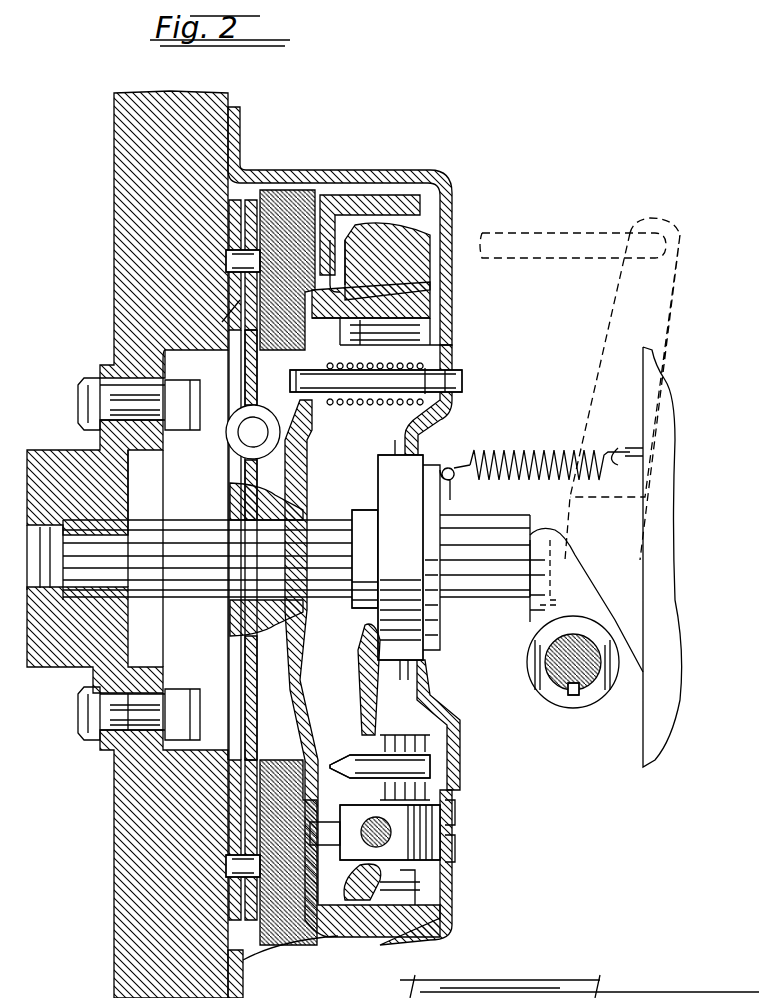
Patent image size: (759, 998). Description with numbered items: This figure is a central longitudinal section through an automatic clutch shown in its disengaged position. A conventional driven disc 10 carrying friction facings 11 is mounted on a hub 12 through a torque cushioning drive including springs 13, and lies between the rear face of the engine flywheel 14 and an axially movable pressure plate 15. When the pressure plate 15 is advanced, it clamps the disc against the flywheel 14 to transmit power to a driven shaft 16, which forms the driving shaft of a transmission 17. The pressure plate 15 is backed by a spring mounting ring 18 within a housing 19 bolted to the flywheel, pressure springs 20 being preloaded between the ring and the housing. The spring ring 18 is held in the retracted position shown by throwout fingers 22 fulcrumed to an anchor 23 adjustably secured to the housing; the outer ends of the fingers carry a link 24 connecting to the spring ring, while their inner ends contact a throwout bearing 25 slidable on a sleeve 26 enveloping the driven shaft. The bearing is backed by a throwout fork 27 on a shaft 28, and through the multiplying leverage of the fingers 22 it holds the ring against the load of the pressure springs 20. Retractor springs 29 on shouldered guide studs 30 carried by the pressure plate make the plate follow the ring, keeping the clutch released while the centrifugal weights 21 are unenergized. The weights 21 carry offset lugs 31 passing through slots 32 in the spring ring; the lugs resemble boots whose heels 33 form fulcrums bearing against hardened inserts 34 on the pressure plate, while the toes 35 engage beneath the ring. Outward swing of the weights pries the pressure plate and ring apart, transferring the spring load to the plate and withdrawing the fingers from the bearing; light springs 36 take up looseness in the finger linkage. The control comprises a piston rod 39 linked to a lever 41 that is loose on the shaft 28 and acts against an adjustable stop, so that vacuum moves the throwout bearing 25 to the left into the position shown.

The driven disc 10 is at (245, 352).
The friction facings 11 is at (253, 198).
The hub 12 is at (235, 500).
The springs 13 is at (232, 440).
The engine flywheel 14 is at (130, 283).
The pressure plate 15 is at (292, 205).
The driven shaft 16 is at (318, 525).
The transmission 17 is at (660, 745).
The spring mounting ring 18 is at (336, 196).
The housing 19 is at (362, 176).
The pressure springs 20 is at (355, 332).
The centrifugal weights 21 is at (400, 225).
The throwout fingers 22 is at (365, 718).
The anchor 23 is at (440, 832).
The link 24 is at (440, 898).
The throwout bearing 25 is at (409, 560).
The sleeve 26 is at (360, 600).
The throwout fork 27 is at (545, 565).
The shaft 28 is at (573, 670).
The retractor springs 29 is at (370, 398).
The shouldered guide studs 30 is at (462, 385).
The offset lugs 31 is at (345, 300).
The slots 32 is at (340, 288).
The heels 33 is at (222, 322).
The hardened inserts 34 is at (332, 262).
The toes 35 is at (360, 346).
The light springs 36 is at (398, 736).
The piston rod 39 is at (560, 236).
The lever 41 is at (615, 305).